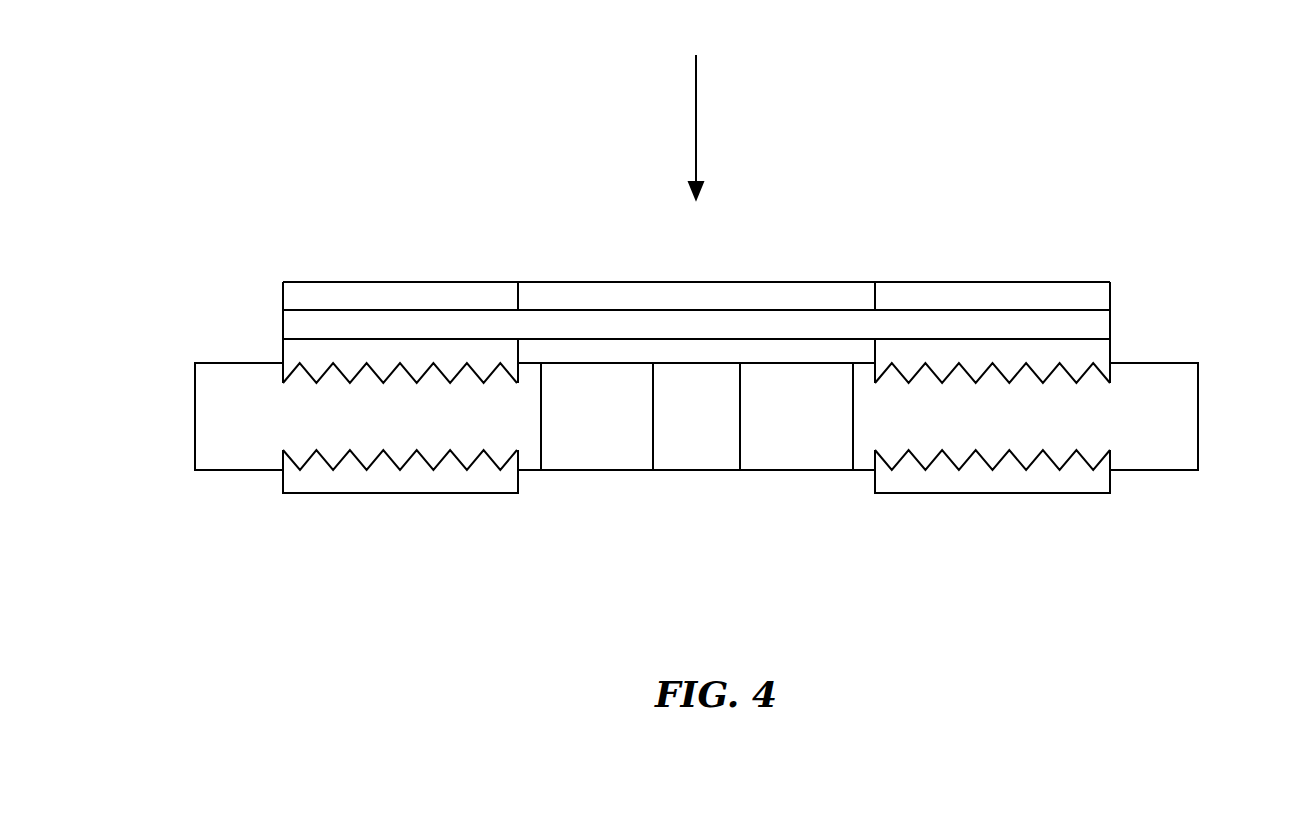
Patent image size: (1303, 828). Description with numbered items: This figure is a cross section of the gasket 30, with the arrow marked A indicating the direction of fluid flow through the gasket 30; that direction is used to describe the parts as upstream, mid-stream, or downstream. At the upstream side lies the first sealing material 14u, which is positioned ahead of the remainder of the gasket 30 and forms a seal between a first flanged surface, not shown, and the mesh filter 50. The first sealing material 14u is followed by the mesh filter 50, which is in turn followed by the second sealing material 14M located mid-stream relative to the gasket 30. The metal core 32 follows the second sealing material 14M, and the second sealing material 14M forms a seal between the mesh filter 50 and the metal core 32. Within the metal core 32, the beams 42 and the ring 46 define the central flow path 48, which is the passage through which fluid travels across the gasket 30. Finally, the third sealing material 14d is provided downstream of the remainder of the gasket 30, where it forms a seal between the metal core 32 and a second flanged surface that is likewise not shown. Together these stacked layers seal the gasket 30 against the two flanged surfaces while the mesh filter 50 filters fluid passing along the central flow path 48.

The gasket 30 is at (1005, 150).
The first sealing material 14u is at (1003, 297).
The mesh filter 50 is at (1087, 328).
The second sealing material 14M is at (303, 353).
The third sealing material 14d is at (393, 483).
The metal core 32 is at (1178, 437).
The beams 42 is at (557, 457).
The ring 46 is at (617, 438).
The central flow path 48 is at (678, 437).